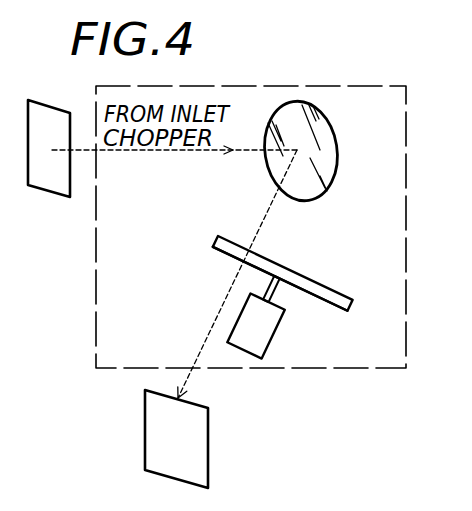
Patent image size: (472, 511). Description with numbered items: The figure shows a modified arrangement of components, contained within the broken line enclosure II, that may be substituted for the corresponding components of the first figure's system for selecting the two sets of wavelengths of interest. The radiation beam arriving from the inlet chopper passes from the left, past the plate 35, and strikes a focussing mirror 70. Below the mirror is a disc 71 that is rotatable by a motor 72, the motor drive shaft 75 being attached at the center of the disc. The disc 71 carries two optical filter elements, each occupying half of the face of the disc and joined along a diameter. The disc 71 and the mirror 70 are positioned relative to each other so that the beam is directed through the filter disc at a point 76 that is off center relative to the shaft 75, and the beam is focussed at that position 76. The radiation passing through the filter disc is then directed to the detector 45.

The broken line enclosure II is at (96, 231).
The entrance slit / window plate 35 is at (72, 77).
The detector 45 is at (208, 437).
The focussing mirror 70 is at (336, 140).
The disc 71 is at (352, 303).
The motor 72 is at (270, 338).
The motor drive shaft 75 is at (282, 286).
The point 76 is at (240, 257).